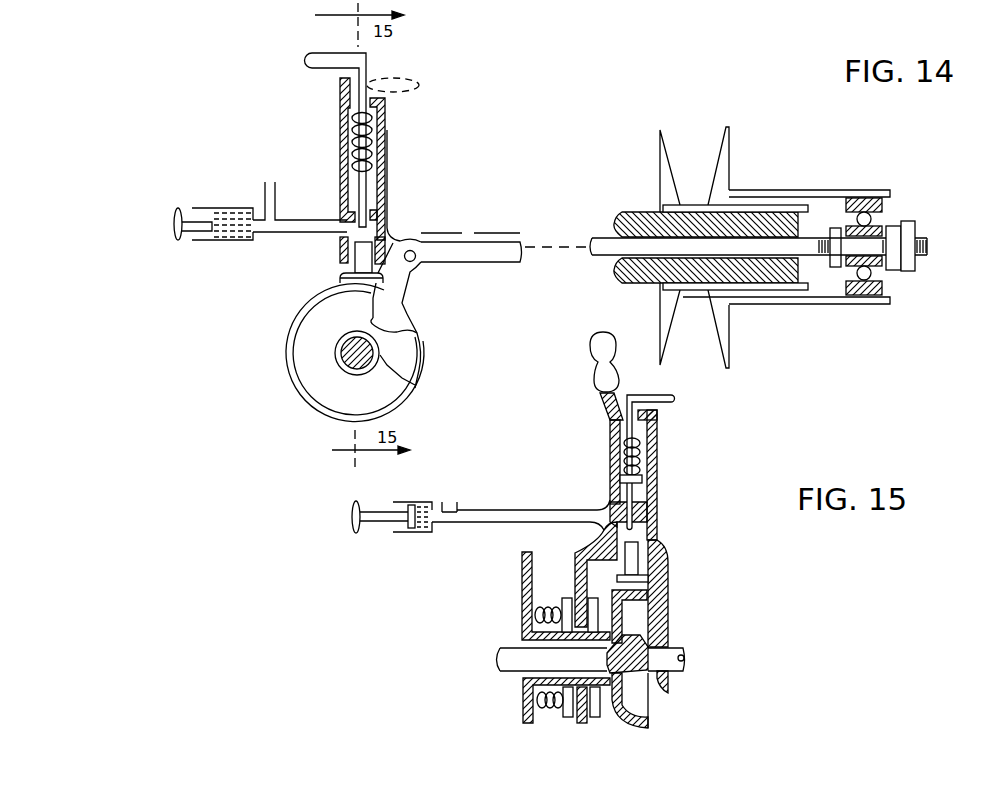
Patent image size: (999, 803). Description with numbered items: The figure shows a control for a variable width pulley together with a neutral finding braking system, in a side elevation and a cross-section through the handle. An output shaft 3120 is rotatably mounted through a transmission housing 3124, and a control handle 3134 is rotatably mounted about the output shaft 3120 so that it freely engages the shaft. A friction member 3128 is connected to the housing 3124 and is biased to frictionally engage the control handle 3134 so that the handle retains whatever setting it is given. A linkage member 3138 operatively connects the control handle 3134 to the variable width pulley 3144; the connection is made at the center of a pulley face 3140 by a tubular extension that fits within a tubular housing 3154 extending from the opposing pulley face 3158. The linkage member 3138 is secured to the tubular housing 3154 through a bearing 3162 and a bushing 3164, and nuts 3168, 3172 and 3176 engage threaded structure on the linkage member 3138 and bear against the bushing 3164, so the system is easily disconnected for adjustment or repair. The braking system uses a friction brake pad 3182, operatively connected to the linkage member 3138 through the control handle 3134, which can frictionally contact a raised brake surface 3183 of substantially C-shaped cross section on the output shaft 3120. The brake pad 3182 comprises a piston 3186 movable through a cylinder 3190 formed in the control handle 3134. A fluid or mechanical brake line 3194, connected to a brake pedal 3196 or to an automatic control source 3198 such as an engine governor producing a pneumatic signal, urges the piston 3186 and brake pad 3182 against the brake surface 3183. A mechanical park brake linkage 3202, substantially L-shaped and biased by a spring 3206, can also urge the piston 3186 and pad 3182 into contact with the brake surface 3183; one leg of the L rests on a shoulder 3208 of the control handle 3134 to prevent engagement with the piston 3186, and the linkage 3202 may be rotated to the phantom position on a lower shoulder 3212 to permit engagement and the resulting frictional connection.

In FIG. 14, the output shaft 3120 is at (337, 355).
In FIG. 15, the output shaft 3120 is at (684, 658).
In FIG. 15, the transmission housing 3124 is at (530, 712).
In FIG. 14, the friction member 3128 is at (400, 352).
In FIG. 15, the friction member 3128 is at (562, 598).
In FIG. 14, the control handle 3134 is at (340, 113).
In FIG. 15, the control handle 3134 is at (657, 467).
In FIG. 14, the linkage member 3138 is at (468, 248).
In FIG. 14, the pulley face 3140 is at (660, 163).
In FIG. 14, the variable width pulley 3144 is at (676, 158).
In FIG. 14, the tubular housing 3154 is at (773, 197).
In FIG. 14, the opposing pulley face 3158 is at (723, 178).
In FIG. 14, the bearing 3162 is at (872, 217).
In FIG. 14, the bushing 3164 is at (894, 270).
In FIG. 14, the nut 3168 is at (836, 267).
In FIG. 14, the nut 3172 is at (917, 263).
In FIG. 14, the nut 3176 is at (922, 242).
In FIG. 14, the friction brake pad 3182 is at (347, 277).
In FIG. 15, the friction brake pad 3182 is at (666, 590).
In FIG. 14, the raised brake surface 3183 is at (298, 310).
In FIG. 15, the raised brake surface 3183 is at (640, 701).
In FIG. 15, the piston 3186 is at (636, 563).
In FIG. 15, the cylinder 3190 is at (640, 538).
In FIG. 15, the brake line 3194 is at (533, 510).
In FIG. 14, the brake pedal 3196 is at (175, 223).
In FIG. 15, the brake pedal 3196 is at (352, 517).
In FIG. 14, the automatic control source 3198 is at (277, 195).
In FIG. 15, the automatic control source 3198 is at (443, 511).
In FIG. 14, the mechanical brake linkage 3202 is at (345, 55).
In FIG. 15, the mechanical brake linkage 3202 is at (632, 431).
In FIG. 14, the spring 3206 is at (385, 125).
In FIG. 14, the shoulder 3208 is at (340, 78).
In FIG. 14, the lower shoulder 3212 is at (382, 100).